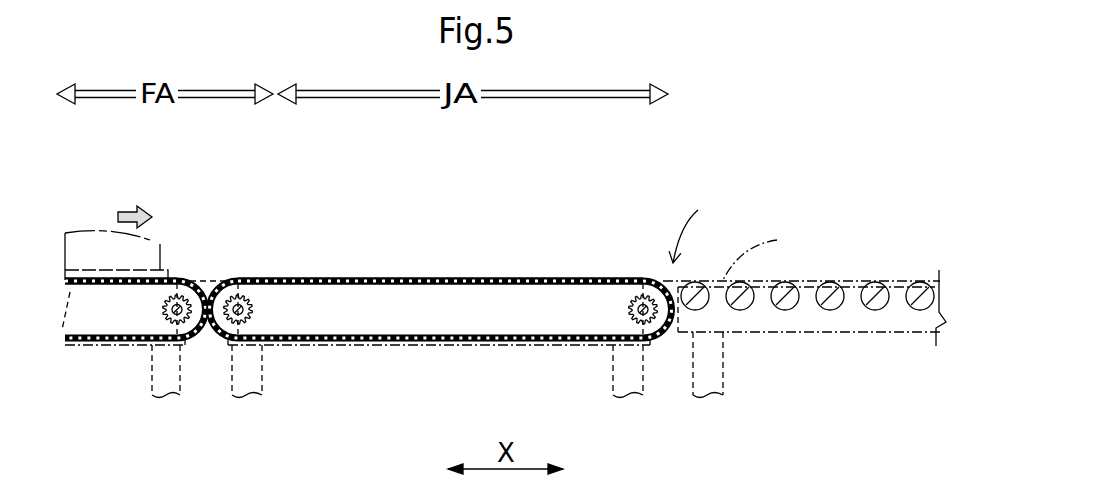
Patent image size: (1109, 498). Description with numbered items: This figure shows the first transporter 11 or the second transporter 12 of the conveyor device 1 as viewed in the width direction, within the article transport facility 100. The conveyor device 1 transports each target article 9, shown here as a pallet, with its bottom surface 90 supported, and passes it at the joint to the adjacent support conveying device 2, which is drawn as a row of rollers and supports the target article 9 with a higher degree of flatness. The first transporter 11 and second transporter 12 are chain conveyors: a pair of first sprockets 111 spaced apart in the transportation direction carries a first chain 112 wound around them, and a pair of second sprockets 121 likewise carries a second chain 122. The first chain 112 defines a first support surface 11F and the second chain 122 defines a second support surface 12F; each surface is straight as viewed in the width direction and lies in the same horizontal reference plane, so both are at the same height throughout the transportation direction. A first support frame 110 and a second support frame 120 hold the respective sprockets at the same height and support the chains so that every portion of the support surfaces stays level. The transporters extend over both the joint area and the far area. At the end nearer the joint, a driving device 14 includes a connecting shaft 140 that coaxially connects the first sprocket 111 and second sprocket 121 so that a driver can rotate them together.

The conveyor device 1 is at (246, 178).
The support conveying device 2 is at (892, 264).
The target article 9 is at (170, 253).
The bottom surface 90 is at (105, 296).
The article transport facility 100 is at (754, 150).
The first transporter 11 is at (122, 386).
The second transporter 12 is at (529, 250).
The first support surface 11F is at (440, 231).
The second support surface 12F is at (430, 281).
The first support frame 110 is at (357, 403).
The second support frame 120 is at (424, 347).
The first sprocket 111 is at (252, 318).
The second sprocket 121 is at (626, 318).
The first chain 112 is at (440, 257).
The second chain 122 is at (290, 281).
The connecting shaft 140 is at (678, 374).
The driving device 14 is at (648, 312).